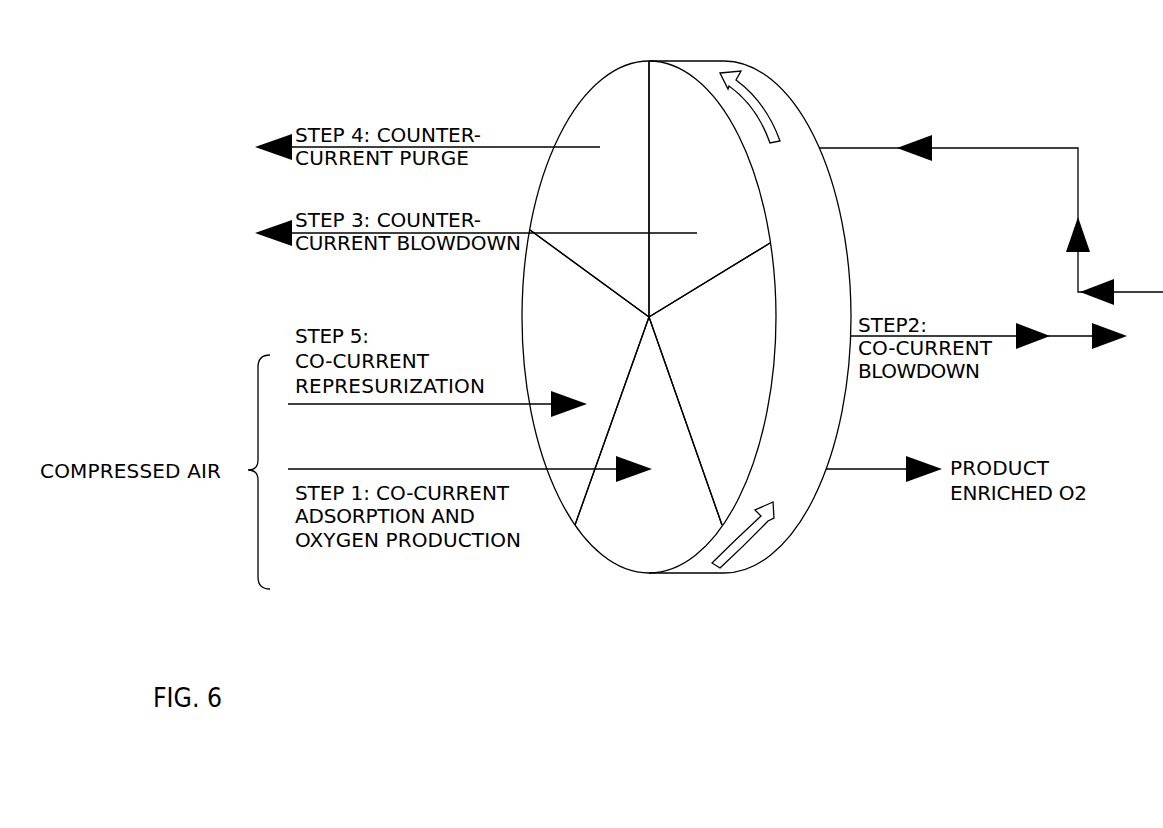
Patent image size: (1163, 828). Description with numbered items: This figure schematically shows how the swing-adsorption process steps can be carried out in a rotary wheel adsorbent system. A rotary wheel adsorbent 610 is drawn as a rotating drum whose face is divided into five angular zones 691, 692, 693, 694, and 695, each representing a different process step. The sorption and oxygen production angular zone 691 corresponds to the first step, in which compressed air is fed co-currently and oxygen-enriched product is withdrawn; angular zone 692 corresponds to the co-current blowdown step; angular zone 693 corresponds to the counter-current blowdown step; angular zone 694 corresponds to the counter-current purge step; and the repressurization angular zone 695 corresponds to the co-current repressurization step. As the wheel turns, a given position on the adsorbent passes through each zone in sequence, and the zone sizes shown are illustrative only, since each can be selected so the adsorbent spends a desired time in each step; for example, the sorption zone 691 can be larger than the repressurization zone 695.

The rotary wheel adsorbent 610 is at (752, 566).
The sorption and oxygen production angular zone 691 is at (617, 555).
The angular zone 692 is at (758, 360).
The angular zone 693 is at (673, 77).
The angular zone 694 is at (600, 90).
The repressurization angular zone 695 is at (528, 339).